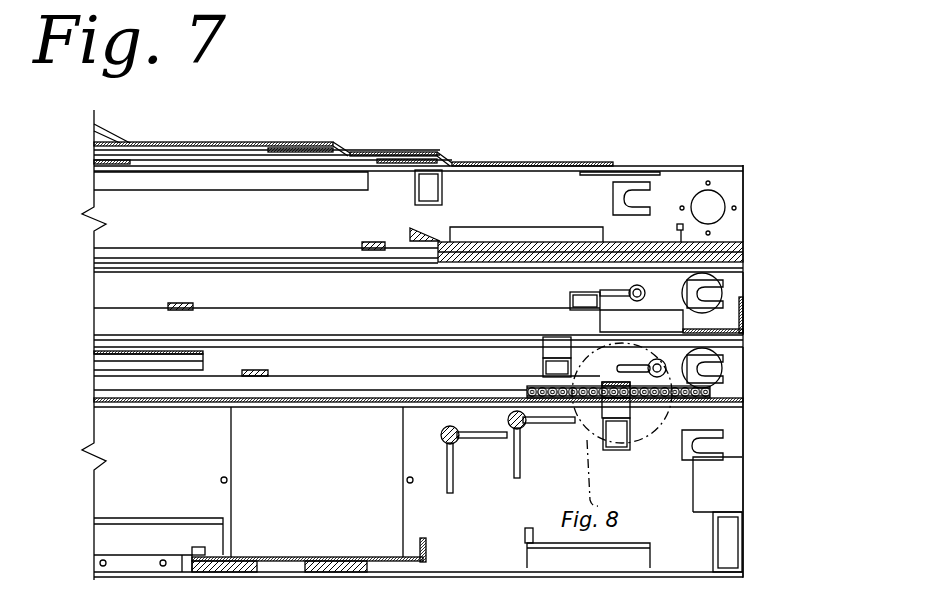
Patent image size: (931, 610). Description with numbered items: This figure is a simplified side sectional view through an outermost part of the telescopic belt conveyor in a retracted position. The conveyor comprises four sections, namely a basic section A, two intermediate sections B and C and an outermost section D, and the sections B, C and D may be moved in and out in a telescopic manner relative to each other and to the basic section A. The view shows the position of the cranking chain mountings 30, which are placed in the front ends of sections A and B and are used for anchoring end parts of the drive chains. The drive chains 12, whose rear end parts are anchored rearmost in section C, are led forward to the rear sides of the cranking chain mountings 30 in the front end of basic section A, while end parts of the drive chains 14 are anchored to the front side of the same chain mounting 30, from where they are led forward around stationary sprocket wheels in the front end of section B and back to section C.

The drive chains 12 is at (572, 398).
The drive chains 14 is at (665, 405).
The cranking chain mountings 30 is at (617, 389).
The basic section A is at (748, 487).
The intermediate section B is at (748, 368).
The intermediate section C is at (748, 290).
The outermost section D is at (748, 219).